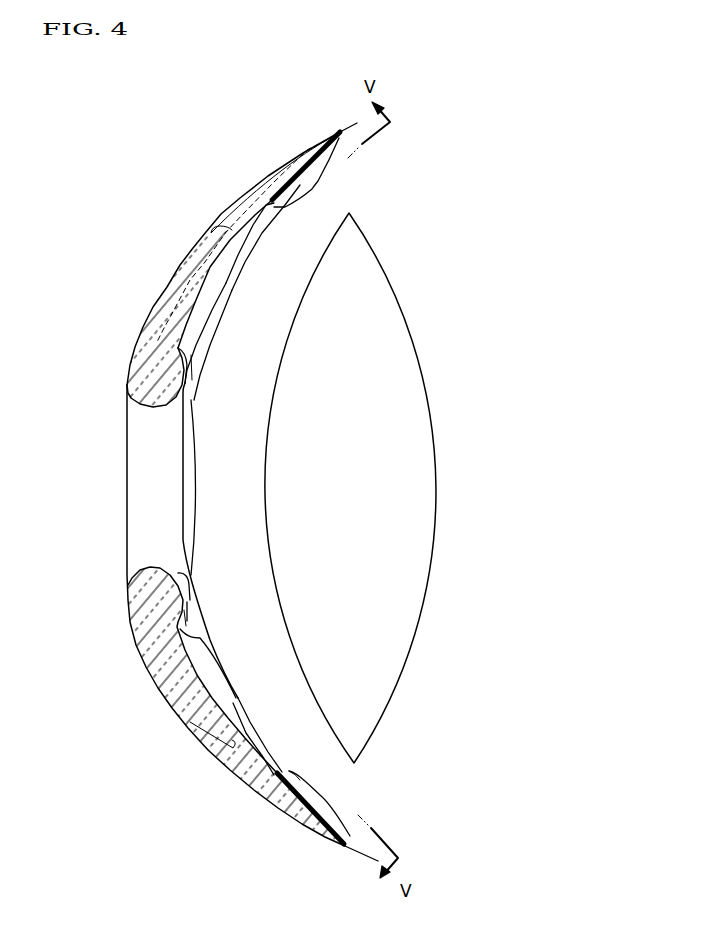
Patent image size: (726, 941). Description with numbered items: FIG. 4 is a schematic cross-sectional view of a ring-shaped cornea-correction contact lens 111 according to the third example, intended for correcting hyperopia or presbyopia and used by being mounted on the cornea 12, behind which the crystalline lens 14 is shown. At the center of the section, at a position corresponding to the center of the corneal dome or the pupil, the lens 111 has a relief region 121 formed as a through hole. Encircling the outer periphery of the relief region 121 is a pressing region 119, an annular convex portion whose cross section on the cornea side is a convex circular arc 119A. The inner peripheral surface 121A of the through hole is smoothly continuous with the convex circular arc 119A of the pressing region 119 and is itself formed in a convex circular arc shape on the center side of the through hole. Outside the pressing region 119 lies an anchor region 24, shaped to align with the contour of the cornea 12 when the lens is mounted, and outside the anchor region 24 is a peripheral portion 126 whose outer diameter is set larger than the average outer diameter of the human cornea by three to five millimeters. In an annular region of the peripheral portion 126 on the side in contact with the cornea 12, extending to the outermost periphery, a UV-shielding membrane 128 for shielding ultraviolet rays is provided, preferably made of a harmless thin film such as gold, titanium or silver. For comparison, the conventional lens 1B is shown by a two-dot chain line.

The crystalline lens 14 is at (385, 335).
The cornea 12 is at (202, 638).
The ring-shaped cornea-correction contact lens 111 is at (157, 300).
The convex circular arc of the pressing region 119A is at (134, 412).
The pressing region 119 is at (188, 382).
The relief region 121 is at (195, 405).
The inner peripheral surface of the through hole 121A is at (143, 568).
The anchor region 24 is at (225, 282).
The peripheral portion 126 is at (316, 187).
The UV-shielding membrane 128 is at (273, 186).
The conventional lens 1B is at (208, 237).